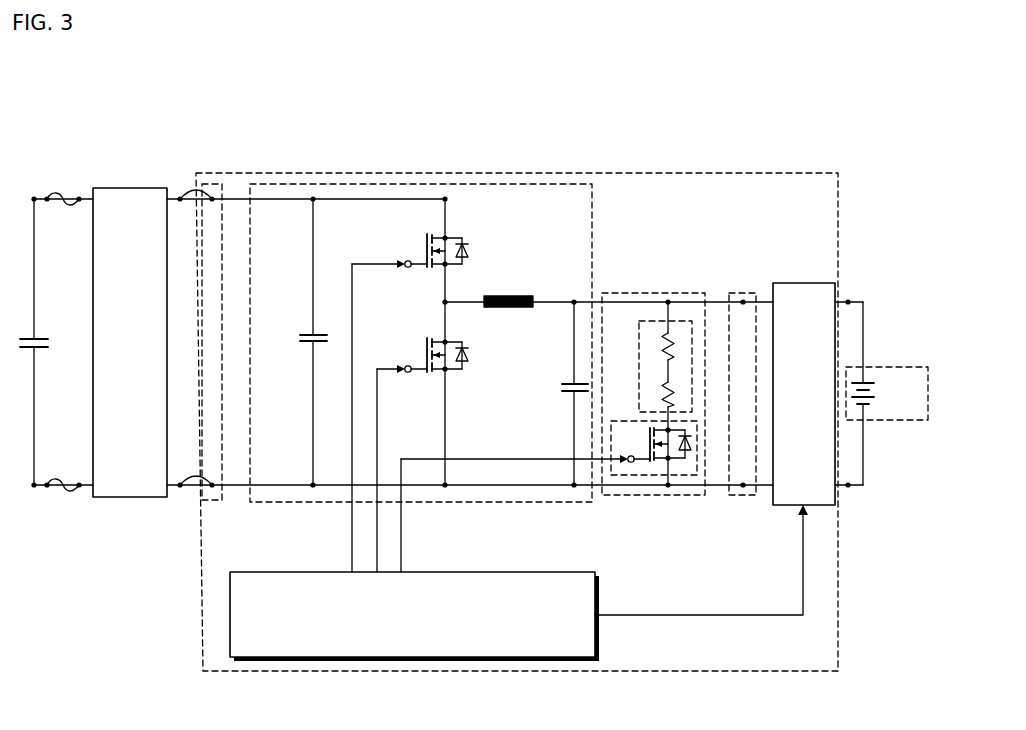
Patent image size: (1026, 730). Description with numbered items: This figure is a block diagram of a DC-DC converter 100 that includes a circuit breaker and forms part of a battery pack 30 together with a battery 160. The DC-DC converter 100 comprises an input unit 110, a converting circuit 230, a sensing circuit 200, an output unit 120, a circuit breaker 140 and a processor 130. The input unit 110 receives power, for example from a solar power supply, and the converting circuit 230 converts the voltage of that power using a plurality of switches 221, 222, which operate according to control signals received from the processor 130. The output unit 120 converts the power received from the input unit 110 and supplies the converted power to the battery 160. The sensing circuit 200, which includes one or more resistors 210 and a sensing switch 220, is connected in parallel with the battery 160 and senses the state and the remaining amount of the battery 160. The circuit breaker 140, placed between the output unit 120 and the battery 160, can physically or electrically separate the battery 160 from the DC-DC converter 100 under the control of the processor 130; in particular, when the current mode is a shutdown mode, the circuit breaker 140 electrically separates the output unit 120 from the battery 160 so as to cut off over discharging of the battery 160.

The battery pack 30 is at (672, 92).
The DC-DC converter 100 is at (838, 195).
The input unit 110 is at (222, 184).
The output unit 120 is at (742, 496).
The processor 130 is at (567, 572).
The circuit breaker 140 is at (803, 282).
The battery 160 is at (900, 367).
The sensing circuit 200 is at (653, 292).
The resistors 210 is at (683, 318).
The sensing switch 220 is at (687, 476).
The switch 221 is at (460, 238).
The switch 222 is at (462, 345).
The converting circuit 230 is at (593, 223).